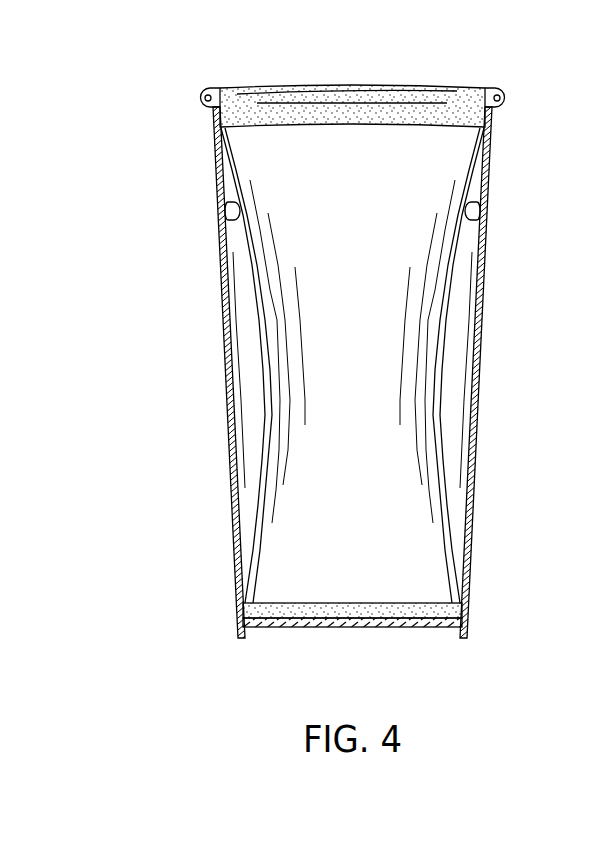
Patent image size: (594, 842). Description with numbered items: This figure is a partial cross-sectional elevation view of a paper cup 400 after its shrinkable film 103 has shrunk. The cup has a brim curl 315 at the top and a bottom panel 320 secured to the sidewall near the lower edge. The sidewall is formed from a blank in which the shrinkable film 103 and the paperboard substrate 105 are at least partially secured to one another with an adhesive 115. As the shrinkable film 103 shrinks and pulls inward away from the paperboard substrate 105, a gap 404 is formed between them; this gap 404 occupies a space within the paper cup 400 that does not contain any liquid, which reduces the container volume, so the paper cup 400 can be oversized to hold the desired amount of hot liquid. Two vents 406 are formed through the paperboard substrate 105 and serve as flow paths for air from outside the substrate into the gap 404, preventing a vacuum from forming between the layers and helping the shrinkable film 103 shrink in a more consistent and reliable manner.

The paper cup 400 is at (322, 353).
The brim curl 315 is at (420, 86).
The bottom panel 320 is at (297, 623).
The adhesive 115 is at (263, 102).
The paperboard substrate 105 is at (220, 246).
The shrinkable film 103 is at (262, 475).
The gap 404 is at (243, 373).
The vent 406 is at (220, 203).